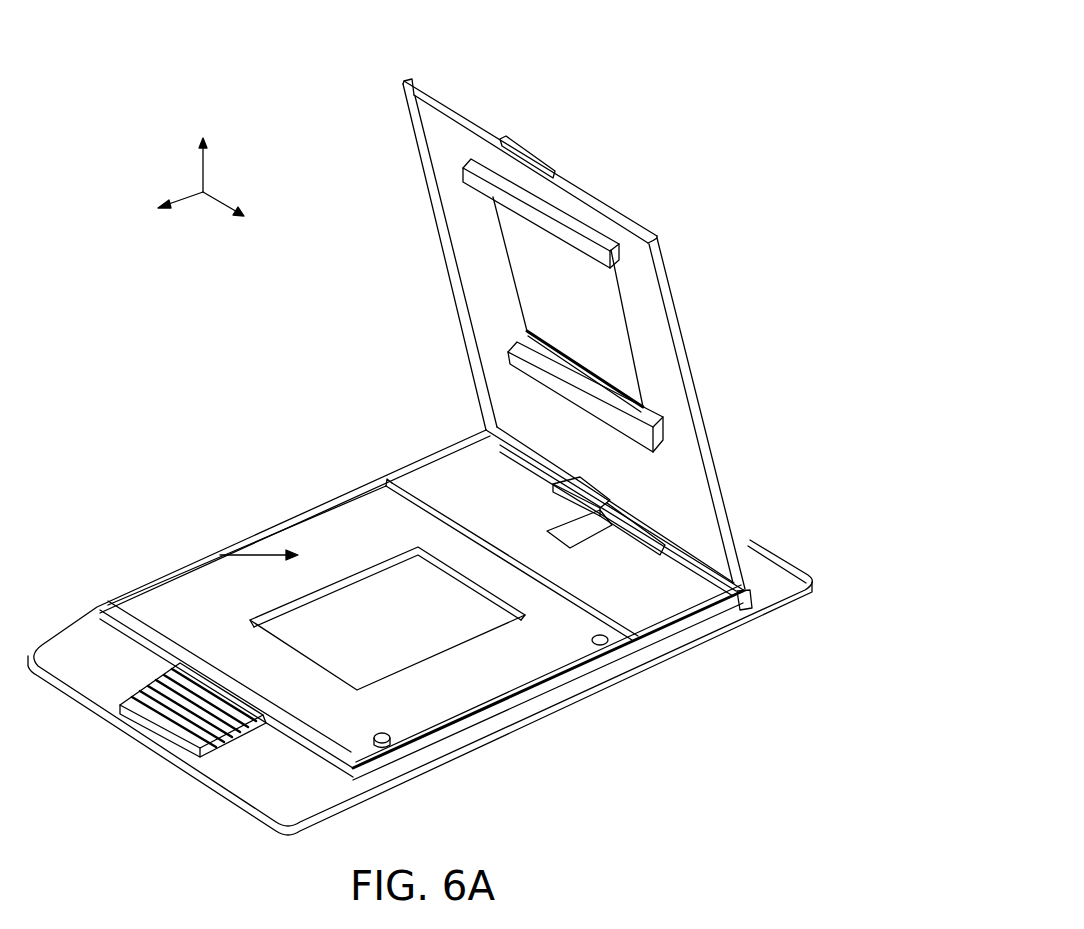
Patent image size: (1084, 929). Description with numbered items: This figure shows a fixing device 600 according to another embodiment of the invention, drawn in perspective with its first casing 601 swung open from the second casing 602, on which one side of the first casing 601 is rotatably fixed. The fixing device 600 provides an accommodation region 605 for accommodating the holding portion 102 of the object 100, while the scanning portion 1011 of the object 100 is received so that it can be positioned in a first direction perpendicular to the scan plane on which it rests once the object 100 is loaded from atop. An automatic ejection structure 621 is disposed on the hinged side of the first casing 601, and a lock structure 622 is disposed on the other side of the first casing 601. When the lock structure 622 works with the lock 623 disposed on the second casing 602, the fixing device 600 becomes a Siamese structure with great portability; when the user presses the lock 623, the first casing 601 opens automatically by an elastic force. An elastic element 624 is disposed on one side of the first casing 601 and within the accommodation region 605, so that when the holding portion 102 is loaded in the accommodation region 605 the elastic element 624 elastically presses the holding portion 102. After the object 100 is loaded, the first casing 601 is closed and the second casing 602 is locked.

The fixing device 600 is at (798, 57).
The first casing 601 is at (452, 297).
The second casing 602 is at (387, 488).
The accommodation region 605 is at (220, 552).
The automatic ejection structure 621 is at (572, 511).
The lock structure 622 is at (527, 160).
The lock 623 is at (183, 710).
The elastic element 624 is at (613, 258).
The object 100 is at (391, 539).
The holding portion 102 is at (485, 665).
The scanning portion 1011 is at (428, 639).